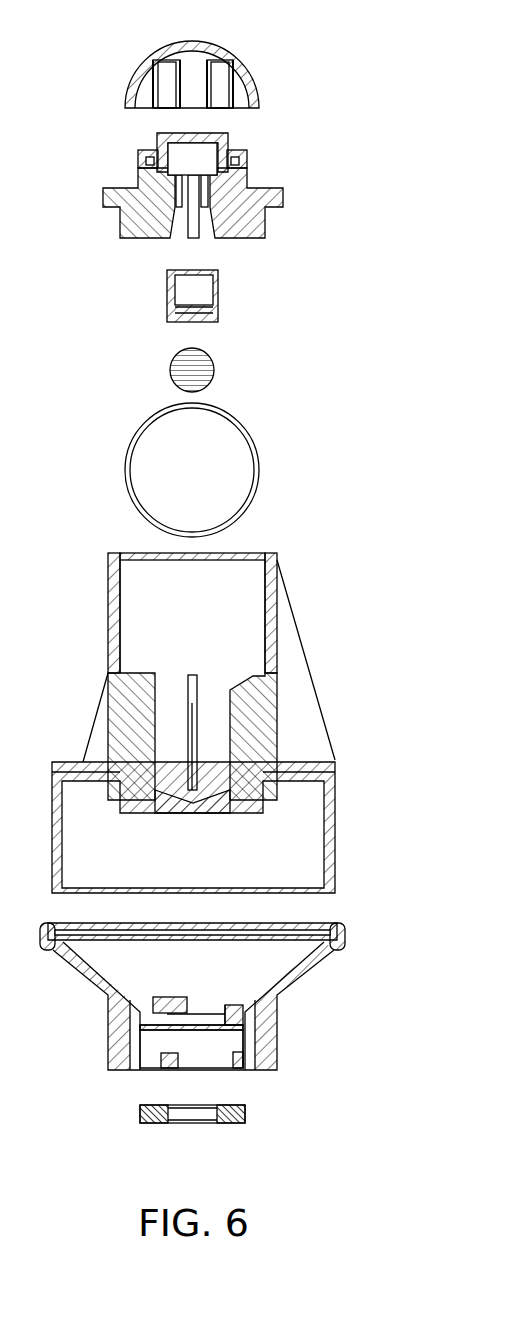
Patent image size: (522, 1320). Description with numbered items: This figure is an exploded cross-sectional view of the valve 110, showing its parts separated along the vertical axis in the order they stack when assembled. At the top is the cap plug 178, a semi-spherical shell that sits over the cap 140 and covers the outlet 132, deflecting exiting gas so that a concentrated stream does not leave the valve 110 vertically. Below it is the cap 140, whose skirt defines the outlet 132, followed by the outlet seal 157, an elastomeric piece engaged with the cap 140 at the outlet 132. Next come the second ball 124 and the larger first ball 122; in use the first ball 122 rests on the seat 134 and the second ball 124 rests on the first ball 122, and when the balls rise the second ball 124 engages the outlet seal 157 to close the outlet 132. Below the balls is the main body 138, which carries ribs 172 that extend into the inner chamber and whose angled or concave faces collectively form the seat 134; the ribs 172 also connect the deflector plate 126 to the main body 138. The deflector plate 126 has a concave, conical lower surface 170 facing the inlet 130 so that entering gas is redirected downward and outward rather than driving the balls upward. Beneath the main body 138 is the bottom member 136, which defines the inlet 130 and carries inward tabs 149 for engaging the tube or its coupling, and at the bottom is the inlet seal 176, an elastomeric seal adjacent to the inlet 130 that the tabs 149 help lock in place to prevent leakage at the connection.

The valve 110 is at (118, 70).
The cap plug 178 is at (246, 60).
The outlet 132 is at (200, 157).
The cap 140 is at (234, 178).
The outlet seal 157 is at (220, 292).
The second ball 124 is at (215, 368).
The first ball 122 is at (248, 432).
The seat 134 is at (238, 657).
The ribs 172 is at (187, 673).
The deflector plate 126 is at (215, 783).
The main body 138 is at (222, 739).
The concave, conical lower surface 170 is at (157, 813).
The bottom member 136 is at (197, 1015).
The tabs 149 is at (170, 1070).
The inlet 130 is at (205, 1045).
The inlet seal 176 is at (223, 1125).